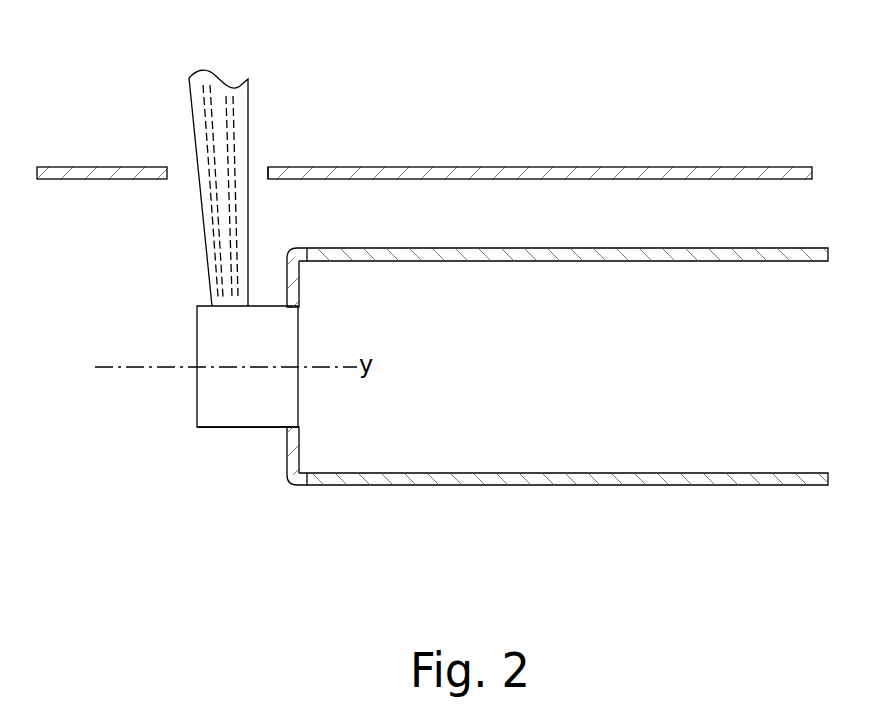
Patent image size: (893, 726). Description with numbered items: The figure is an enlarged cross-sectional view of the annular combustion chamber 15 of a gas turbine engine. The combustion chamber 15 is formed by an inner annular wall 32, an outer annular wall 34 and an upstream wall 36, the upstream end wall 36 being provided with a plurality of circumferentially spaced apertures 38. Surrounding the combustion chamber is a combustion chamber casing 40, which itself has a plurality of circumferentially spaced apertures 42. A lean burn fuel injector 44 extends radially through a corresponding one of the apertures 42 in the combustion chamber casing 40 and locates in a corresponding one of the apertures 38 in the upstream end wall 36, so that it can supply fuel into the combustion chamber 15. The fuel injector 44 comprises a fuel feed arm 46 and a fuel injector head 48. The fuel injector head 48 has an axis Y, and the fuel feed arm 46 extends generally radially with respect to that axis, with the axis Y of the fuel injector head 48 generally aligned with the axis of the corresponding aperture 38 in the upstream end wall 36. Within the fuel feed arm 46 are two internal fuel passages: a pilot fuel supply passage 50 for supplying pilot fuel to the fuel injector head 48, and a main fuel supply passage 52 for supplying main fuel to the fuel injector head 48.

The combustion chamber 15 is at (498, 371).
The inner annular wall 32 is at (562, 475).
The outer annular wall 34 is at (745, 258).
The upstream wall 36 is at (288, 276).
The apertures 38 is at (296, 424).
The combustion chamber casing 40 is at (753, 167).
The apertures 42 is at (269, 167).
The fuel injector 44 is at (194, 409).
The fuel feed arm 46 is at (208, 189).
The fuel injector head 48 is at (248, 418).
The pilot fuel supply passage 50 is at (237, 165).
The main fuel supply passage 52 is at (228, 107).